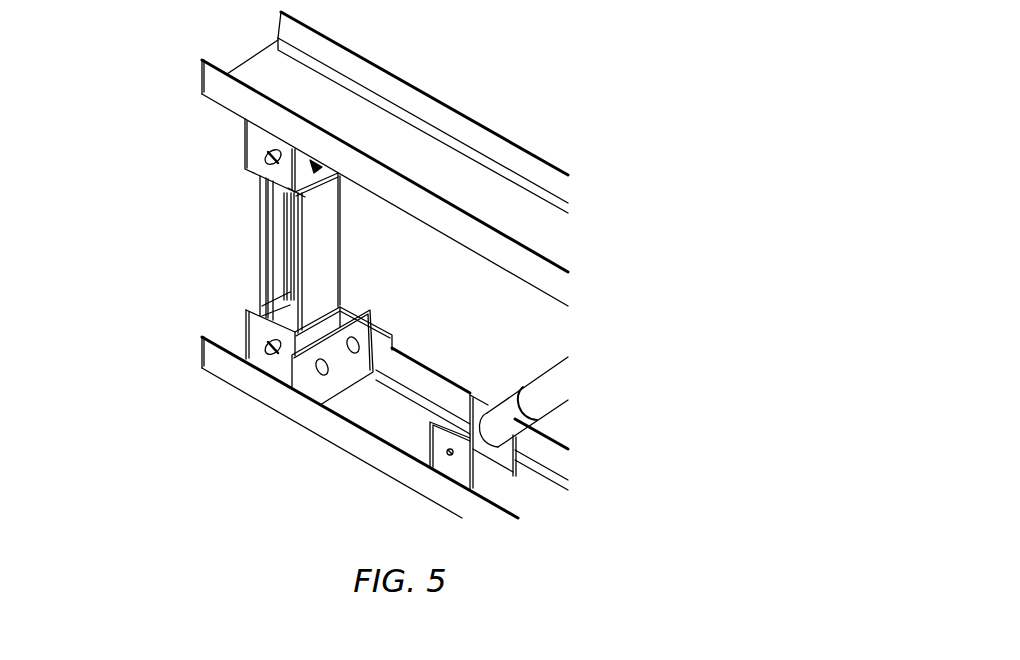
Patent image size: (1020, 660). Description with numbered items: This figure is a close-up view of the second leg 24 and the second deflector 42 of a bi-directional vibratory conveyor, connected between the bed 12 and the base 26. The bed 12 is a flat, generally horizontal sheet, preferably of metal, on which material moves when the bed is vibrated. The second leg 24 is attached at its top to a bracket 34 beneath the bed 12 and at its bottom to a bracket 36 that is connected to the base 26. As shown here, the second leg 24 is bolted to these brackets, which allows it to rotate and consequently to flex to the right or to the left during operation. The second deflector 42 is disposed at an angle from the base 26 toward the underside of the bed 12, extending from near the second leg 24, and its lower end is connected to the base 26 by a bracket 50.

The bed 12 is at (535, 232).
The second leg 24 is at (257, 288).
The base 26 is at (257, 347).
The bracket 34 is at (253, 159).
The bracket 36 is at (283, 365).
The second deflector 42 is at (548, 398).
The bracket 50 is at (460, 458).